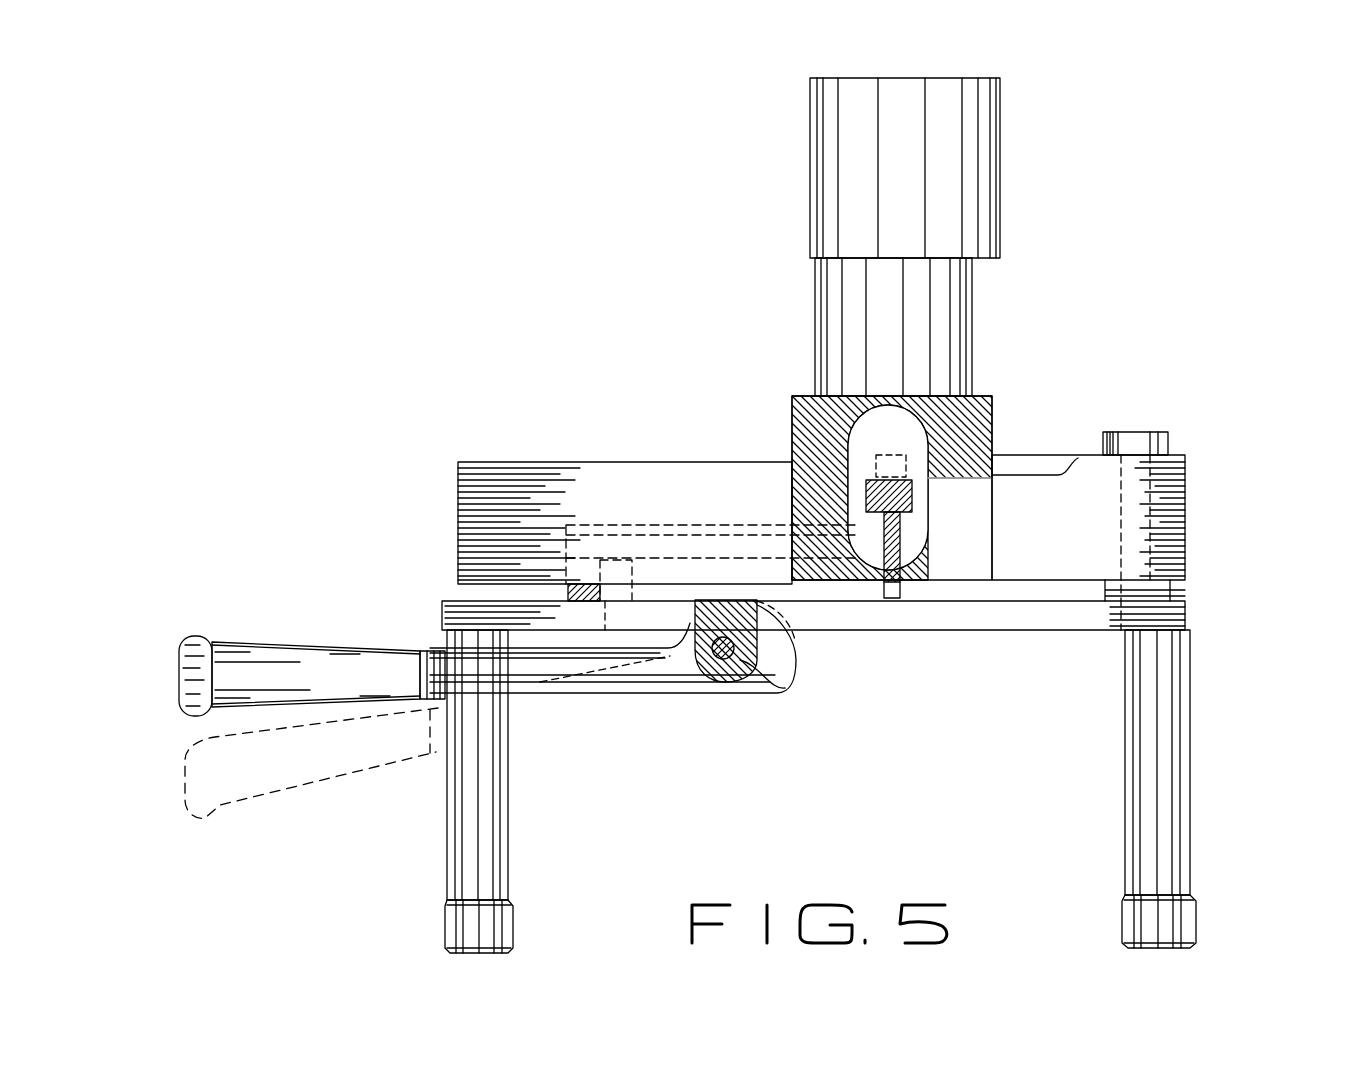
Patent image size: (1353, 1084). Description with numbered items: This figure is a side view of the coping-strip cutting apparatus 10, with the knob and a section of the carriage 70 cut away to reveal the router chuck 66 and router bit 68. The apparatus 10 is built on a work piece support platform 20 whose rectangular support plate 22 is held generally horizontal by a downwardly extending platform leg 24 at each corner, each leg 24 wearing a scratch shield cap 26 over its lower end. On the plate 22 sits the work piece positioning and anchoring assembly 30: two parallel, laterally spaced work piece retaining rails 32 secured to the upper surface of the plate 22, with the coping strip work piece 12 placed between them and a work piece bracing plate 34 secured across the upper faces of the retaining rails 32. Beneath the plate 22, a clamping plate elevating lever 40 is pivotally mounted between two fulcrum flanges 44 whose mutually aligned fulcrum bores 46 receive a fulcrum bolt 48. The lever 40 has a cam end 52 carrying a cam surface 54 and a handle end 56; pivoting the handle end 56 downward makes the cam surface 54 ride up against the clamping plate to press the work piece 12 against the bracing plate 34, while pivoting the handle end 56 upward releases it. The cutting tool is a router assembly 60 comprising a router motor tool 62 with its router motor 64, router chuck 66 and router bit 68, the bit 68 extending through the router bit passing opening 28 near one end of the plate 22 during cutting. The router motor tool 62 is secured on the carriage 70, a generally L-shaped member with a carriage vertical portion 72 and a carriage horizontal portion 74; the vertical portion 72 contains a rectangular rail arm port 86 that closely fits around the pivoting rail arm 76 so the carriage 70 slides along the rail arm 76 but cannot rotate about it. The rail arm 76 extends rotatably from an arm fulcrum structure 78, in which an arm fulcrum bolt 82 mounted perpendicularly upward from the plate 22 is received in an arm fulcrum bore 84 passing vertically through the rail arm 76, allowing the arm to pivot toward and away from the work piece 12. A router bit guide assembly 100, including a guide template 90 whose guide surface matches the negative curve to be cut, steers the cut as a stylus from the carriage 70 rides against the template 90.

The apparatus 10 is at (1228, 255).
The work piece 12 is at (650, 560).
The work piece support platform 20 is at (1058, 622).
The support plate 22 is at (976, 612).
The platform leg 24 is at (447, 846).
The scratch shield cap 26 is at (515, 920).
The router bit passing opening 28 is at (870, 608).
The work piece positioning and anchoring assembly 30 is at (595, 298).
The work piece retaining rail 32 is at (572, 588).
The work piece bracing plate 34 is at (596, 548).
The clamping plate elevating lever 40 is at (645, 695).
The fulcrum flange 44 is at (725, 660).
The fulcrum bore 46 is at (735, 655).
The fulcrum bolt 48 is at (790, 690).
The cam end 52 is at (800, 677).
The cam surface 54 is at (795, 650).
The handle end 56 is at (320, 642).
The router assembly 60 is at (752, 247).
The router motor tool 62 is at (1000, 130).
The router motor 64 is at (1000, 232).
The router chuck 66 is at (1086, 455).
The router bit 68 is at (900, 540).
The carriage 70 is at (995, 400).
The carriage vertical portion 72 is at (866, 492).
The carriage horizontal portion 74 is at (1005, 440).
The pivoting rail arm 76 is at (616, 465).
The arm fulcrum structure 78 is at (1222, 387).
The arm fulcrum bolt 82 is at (1150, 535).
The arm fulcrum bore 84 is at (1190, 466).
The rail arm port 86 is at (815, 442).
The guide template 90 is at (716, 525).
The router bit guide assembly 100 is at (645, 252).